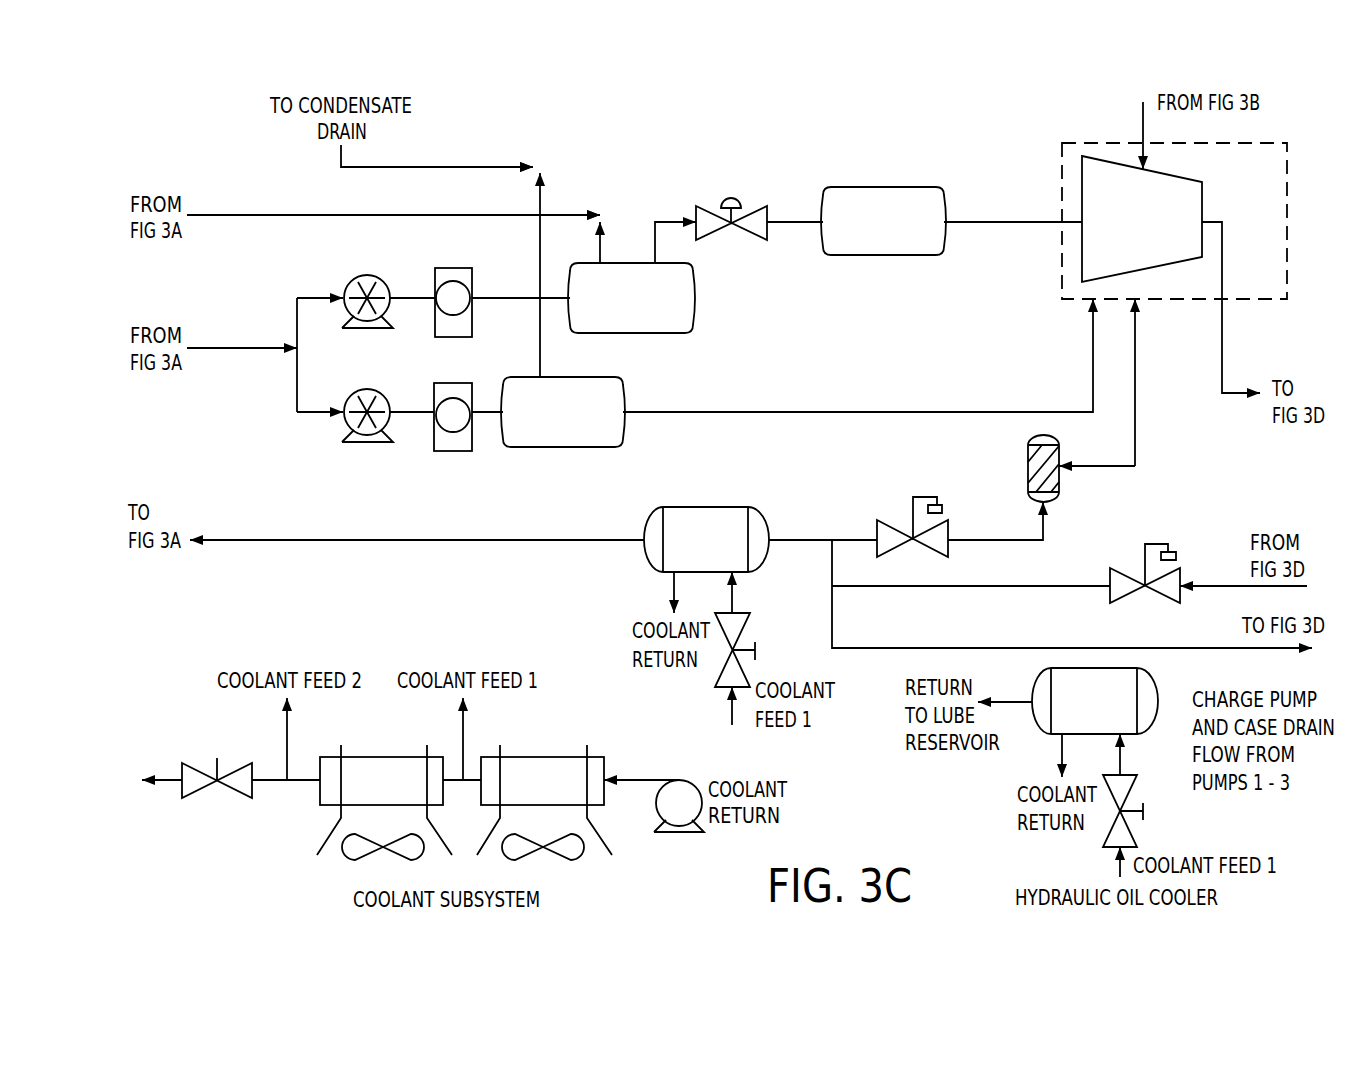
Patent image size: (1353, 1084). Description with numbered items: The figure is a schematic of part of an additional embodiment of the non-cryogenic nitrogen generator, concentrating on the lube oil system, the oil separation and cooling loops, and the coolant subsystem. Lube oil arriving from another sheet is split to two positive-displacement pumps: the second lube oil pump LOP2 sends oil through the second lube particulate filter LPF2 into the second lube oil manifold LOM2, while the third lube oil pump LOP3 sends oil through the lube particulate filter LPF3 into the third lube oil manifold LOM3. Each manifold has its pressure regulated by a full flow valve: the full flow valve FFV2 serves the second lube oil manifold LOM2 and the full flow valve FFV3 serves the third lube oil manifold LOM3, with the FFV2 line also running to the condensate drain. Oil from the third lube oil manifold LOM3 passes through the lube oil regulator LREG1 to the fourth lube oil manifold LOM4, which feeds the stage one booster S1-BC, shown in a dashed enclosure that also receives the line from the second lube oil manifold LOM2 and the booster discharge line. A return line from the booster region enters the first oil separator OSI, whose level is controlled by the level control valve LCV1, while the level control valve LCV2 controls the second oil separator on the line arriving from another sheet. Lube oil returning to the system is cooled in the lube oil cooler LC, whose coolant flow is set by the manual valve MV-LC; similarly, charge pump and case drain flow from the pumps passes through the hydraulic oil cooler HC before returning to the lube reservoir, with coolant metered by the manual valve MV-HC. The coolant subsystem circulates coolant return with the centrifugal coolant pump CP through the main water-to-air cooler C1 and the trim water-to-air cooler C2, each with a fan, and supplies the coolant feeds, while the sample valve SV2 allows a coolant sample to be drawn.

The lube oil pump 3 LOP3 is at (367, 317).
The lube particulate filter LPF3 is at (453, 317).
The lube oil manifold 3 LOM3 is at (631, 313).
The lube oil pump 2 LOP2 is at (367, 432).
The lube particulate filter 2 LPF2 is at (453, 431).
The lube oil manifold 2 LOM2 is at (563, 427).
The full flow valve FFV2 is at (437, 153).
The full flow valve FFV3 is at (578, 199).
The lube oil regulator LREG1 is at (731, 201).
The lube oil manifold 4 LOM4 is at (883, 237).
The stage 1 booster S1-BC is at (1174, 221).
The lube oil cooler LC is at (706, 526).
The level control valve LCV1 is at (912, 510).
The oil separator 1 OSI is at (1090, 483).
The level control valve LCV2 is at (1145, 588).
The manual valve MV-LC is at (764, 650).
The hydraulic oil cooler HC is at (1095, 701).
The manual valve MV-HC is at (1152, 811).
The sample valve SV2 is at (173, 763).
The trim H2O to air cooler C2 is at (384, 816).
The main H2O to air cooler C1 is at (544, 815).
The coolant pump CP is at (679, 821).